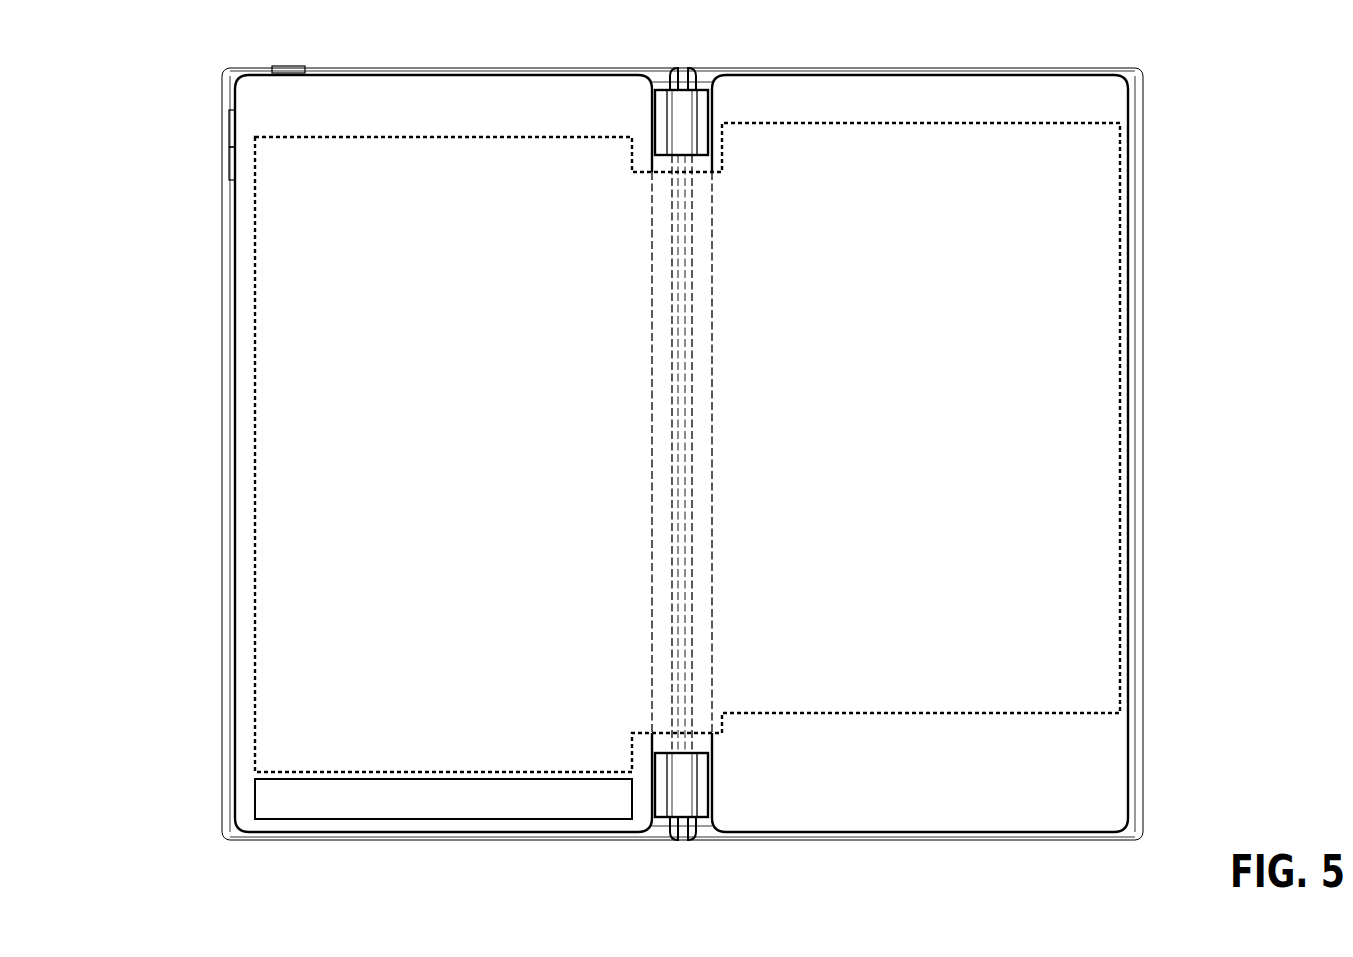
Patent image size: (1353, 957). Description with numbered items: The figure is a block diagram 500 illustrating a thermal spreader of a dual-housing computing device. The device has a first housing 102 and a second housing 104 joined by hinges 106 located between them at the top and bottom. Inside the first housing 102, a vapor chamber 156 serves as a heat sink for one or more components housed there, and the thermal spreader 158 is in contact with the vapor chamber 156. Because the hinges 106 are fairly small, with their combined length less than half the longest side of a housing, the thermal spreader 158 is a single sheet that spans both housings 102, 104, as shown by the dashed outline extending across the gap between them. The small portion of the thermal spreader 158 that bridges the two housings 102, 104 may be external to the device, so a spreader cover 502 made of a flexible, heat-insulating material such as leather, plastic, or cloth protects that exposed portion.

The block diagram 500 is at (120, 70).
The first housing 102 is at (541, 115).
The second housing 104 is at (1020, 108).
The hinges 106 is at (665, 891).
The vapor chamber 156 is at (546, 811).
The thermal spreader 158 is at (573, 412).
The spreader cover 502 is at (690, 740).